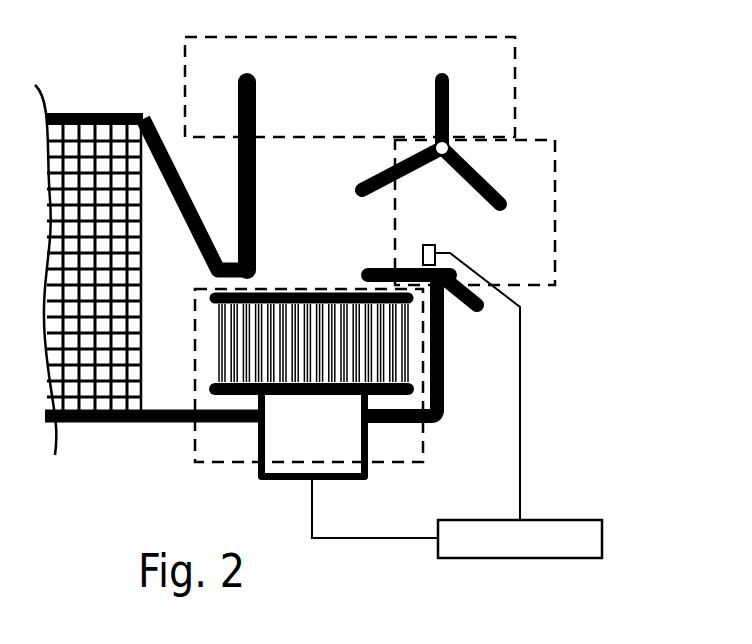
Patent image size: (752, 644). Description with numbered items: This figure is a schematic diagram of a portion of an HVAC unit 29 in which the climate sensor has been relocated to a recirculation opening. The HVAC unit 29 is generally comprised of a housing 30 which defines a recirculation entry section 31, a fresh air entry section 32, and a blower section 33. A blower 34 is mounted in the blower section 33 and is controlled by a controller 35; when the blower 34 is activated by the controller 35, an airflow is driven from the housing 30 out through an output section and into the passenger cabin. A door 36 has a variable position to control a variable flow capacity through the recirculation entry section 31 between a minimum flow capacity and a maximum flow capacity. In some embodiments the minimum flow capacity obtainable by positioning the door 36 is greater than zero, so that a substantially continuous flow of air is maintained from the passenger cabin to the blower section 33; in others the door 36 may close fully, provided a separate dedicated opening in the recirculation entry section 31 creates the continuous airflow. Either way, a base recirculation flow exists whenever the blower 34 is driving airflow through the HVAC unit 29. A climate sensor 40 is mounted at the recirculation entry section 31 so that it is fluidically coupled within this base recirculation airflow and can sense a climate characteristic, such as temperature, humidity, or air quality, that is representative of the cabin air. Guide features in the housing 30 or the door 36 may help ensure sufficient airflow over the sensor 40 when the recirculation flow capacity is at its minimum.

The HVAC unit 29 is at (158, 92).
The housing 30 is at (238, 155).
The recirculation entry section 31 is at (555, 193).
The fresh air entry section 32 is at (515, 63).
The blower section 33 is at (195, 462).
The blower 34 is at (271, 486).
The controller 35 is at (602, 538).
The door 36 is at (378, 182).
The climate sensor 40 is at (427, 245).